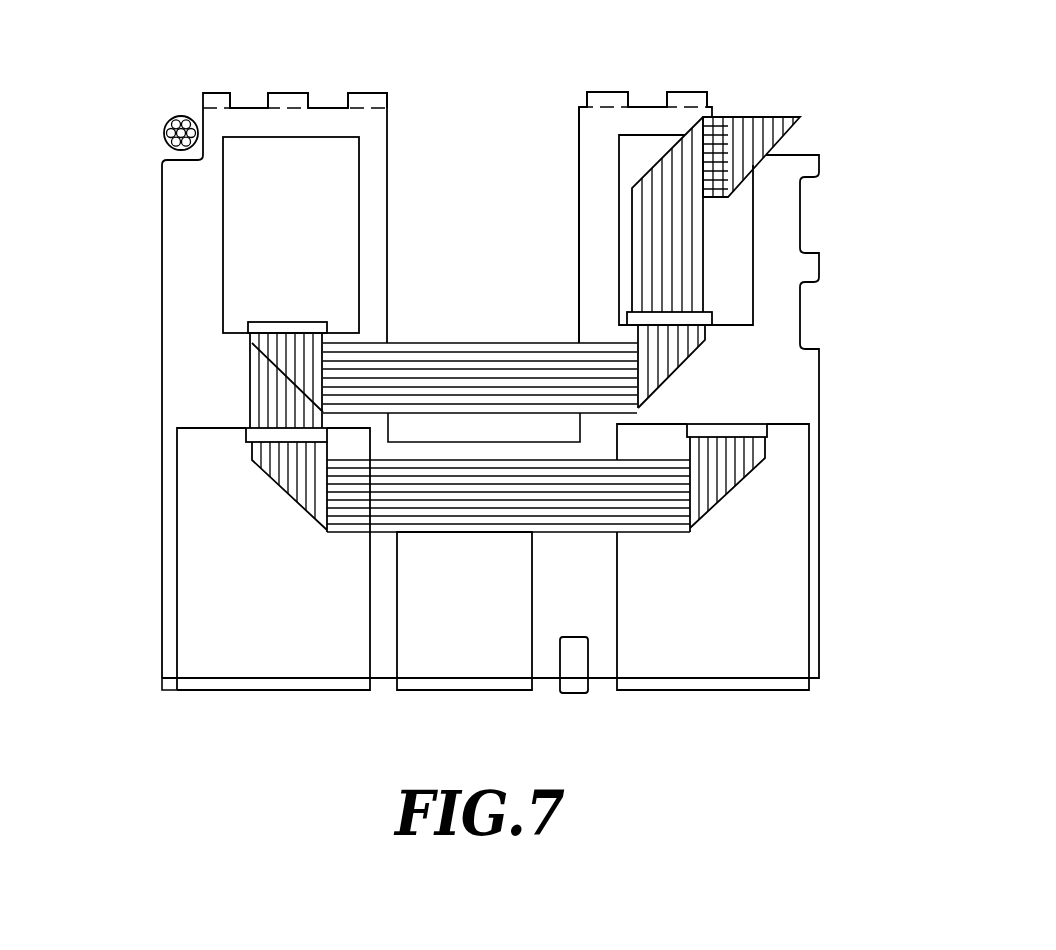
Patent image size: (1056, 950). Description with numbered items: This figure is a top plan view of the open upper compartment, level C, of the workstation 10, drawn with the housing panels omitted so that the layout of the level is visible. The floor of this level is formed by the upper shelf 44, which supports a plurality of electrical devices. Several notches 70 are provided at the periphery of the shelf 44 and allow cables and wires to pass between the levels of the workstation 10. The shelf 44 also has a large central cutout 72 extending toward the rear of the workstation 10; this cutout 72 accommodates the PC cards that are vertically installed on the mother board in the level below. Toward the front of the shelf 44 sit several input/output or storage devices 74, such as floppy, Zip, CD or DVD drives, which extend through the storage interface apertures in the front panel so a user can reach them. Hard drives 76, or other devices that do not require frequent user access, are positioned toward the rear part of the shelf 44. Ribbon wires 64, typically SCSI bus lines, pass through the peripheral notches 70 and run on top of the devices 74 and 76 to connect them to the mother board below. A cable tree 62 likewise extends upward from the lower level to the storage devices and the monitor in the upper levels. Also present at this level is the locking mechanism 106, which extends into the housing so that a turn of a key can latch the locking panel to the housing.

The workstation 10 is at (958, 305).
The upper shelf 44 is at (828, 386).
The cable tree 62 is at (182, 116).
The ribbon wires 64 is at (757, 130).
The notches 70 is at (713, 107).
The central cutout 72 is at (578, 242).
The input/output or storage devices 74 is at (273, 649).
The hard drives 76 is at (303, 157).
The locking mechanism 106 is at (573, 685).